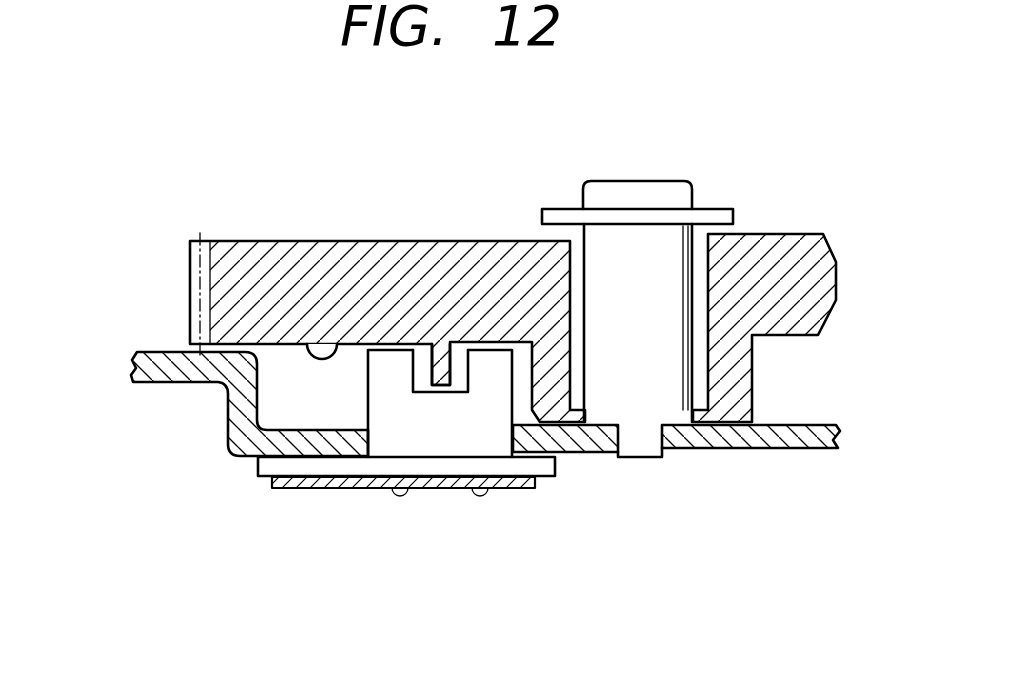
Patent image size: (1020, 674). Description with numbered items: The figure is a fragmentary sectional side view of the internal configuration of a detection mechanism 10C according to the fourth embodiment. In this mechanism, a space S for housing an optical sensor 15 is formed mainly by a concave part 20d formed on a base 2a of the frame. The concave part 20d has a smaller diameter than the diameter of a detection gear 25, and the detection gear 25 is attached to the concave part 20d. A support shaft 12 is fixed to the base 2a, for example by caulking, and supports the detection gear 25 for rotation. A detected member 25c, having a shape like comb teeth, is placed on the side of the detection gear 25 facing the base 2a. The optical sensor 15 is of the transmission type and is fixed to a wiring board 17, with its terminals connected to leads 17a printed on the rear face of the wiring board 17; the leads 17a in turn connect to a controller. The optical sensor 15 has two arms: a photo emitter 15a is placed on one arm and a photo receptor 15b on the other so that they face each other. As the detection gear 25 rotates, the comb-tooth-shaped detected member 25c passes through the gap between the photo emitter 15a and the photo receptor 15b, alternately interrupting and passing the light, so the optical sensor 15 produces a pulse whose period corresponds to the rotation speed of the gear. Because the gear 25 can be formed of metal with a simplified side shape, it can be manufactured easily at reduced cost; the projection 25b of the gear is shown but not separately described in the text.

The detection mechanism 10C is at (173, 123).
The support shaft 12 is at (673, 180).
The detection gear 25 is at (487, 242).
The projection of housing 25b is at (332, 348).
The detected member 25c is at (440, 364).
The space S is at (279, 366).
The wiring board 17 is at (257, 468).
The leads 17a is at (270, 486).
The concave part 20d is at (322, 408).
The optical sensor 15 is at (441, 420).
The photo emitter 15a is at (391, 368).
The photo receptor 15b is at (488, 370).
The base 2a is at (748, 449).